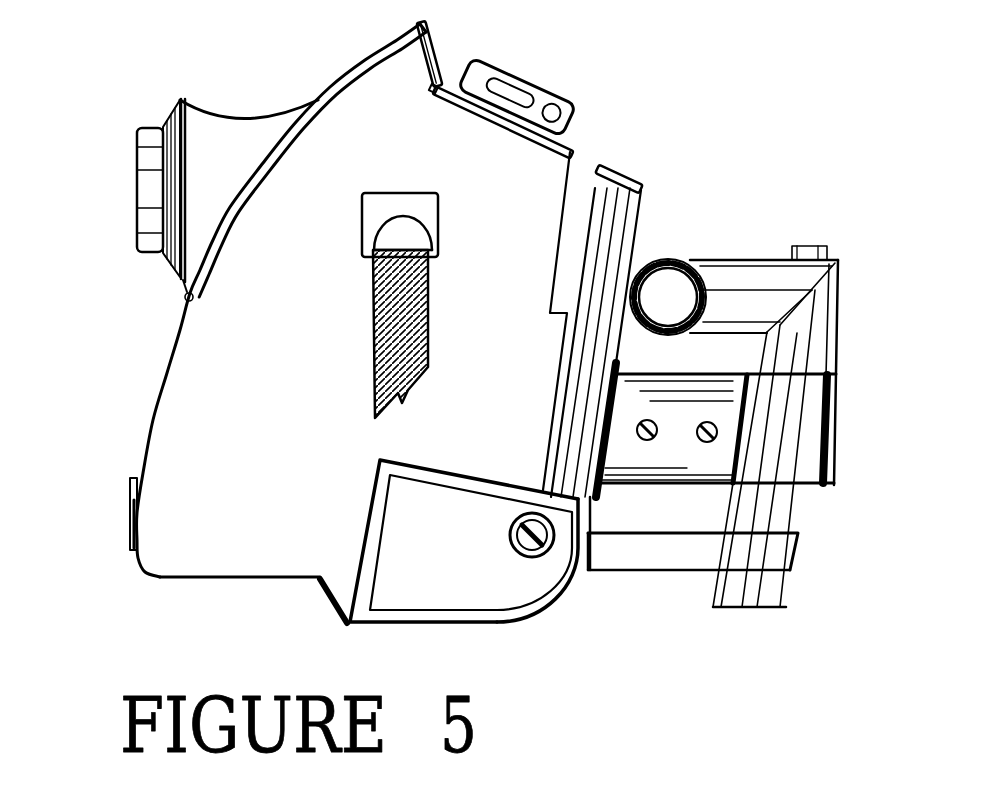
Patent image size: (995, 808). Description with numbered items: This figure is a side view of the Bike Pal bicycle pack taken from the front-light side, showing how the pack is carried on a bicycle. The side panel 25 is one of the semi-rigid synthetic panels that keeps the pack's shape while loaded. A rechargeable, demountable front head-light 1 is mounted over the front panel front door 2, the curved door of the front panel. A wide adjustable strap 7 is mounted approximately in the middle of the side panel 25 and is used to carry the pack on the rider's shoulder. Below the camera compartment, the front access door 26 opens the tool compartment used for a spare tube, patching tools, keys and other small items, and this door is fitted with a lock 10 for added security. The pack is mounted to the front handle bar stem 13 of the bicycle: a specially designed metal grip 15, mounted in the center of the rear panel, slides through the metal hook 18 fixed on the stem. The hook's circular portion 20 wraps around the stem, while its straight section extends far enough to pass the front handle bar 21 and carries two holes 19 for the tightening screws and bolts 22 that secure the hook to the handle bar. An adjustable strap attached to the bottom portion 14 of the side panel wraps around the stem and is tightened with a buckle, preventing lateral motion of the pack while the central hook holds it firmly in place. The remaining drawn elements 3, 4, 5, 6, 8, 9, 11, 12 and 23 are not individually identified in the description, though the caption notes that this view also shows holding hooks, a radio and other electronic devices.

The front head-light 1 is at (147, 125).
The front panel front door 2 is at (332, 86).
The lid flap 3 is at (440, 43).
The switch plate 4 is at (553, 100).
The pin holder 5 is at (370, 192).
The mounting bar 6 is at (508, 113).
The wide adjustable strap 7 is at (440, 367).
The grooved panel 8 is at (562, 267).
The tray 9 is at (473, 485).
The lock 10 is at (527, 548).
The stop lip 11 is at (335, 603).
The side tab 12 is at (130, 507).
The front handle bar stem 13 is at (793, 348).
The bottom portion of side panel 14 is at (647, 552).
The metal grip 15 is at (607, 383).
The metal hook 18 is at (631, 470).
The holes 19 is at (650, 435).
The circular portion of hook 20 is at (770, 438).
The front handle bar 21 is at (655, 260).
The tightening screws and bolts 22 is at (702, 443).
The curved tray edge 23 is at (580, 560).
The side panel 25 is at (297, 427).
The front access door 26 is at (423, 507).